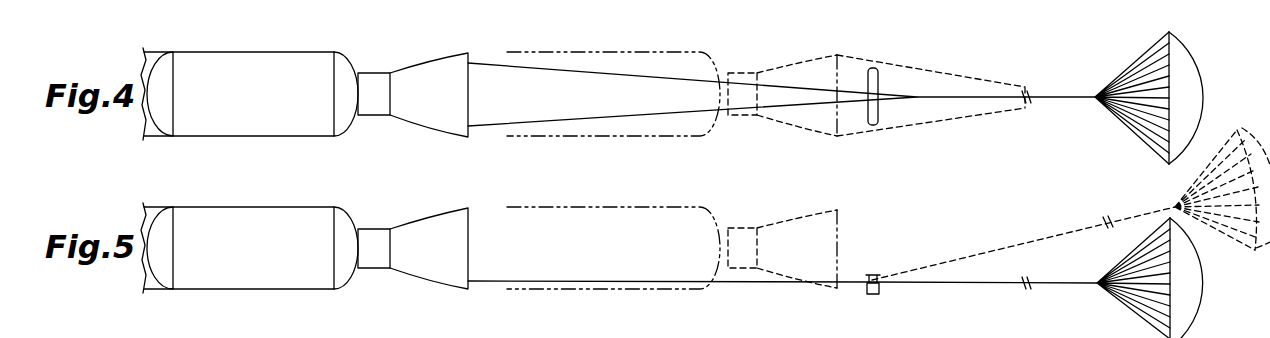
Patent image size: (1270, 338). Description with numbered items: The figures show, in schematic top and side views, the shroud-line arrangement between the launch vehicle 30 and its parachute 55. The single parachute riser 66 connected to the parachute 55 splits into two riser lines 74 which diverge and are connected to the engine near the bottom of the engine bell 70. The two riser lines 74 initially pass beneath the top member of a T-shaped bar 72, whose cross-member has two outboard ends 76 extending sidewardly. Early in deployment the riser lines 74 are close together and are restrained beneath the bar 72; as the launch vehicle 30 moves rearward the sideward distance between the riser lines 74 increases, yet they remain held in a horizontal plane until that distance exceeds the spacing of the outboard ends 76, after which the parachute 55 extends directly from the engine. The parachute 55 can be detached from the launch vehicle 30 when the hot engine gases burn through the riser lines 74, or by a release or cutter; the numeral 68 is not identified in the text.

In FIG. 4, the launch vehicle 30 is at (245, 52).
In FIG. 5, the launch vehicle 30 is at (245, 207).
In FIG. 4, the engine bell 70 is at (430, 60).
In FIG. 5, the engine bell 70 is at (430, 215).
In FIG. 4, the riser lines 74 is at (540, 64).
In FIG. 5, the riser lines 74 is at (562, 282).
In FIG. 4, the outboard ends 76 is at (873, 68).
In FIG. 5, the outboard ends 76 is at (872, 275).
In FIG. 4, the T-shaped bar 72 is at (880, 107).
In FIG. 5, the T-shaped bar 72 is at (880, 290).
In FIG. 4, the parachute riser 66 is at (1057, 96).
In FIG. 5, the parachute riser 66 is at (1057, 232).
In FIG. 4, the parachute 55 is at (1203, 78).
In FIG. 5, the parachute 55 is at (1205, 288).
In FIG. 5, the parachute cord 68 is at (999, 336).